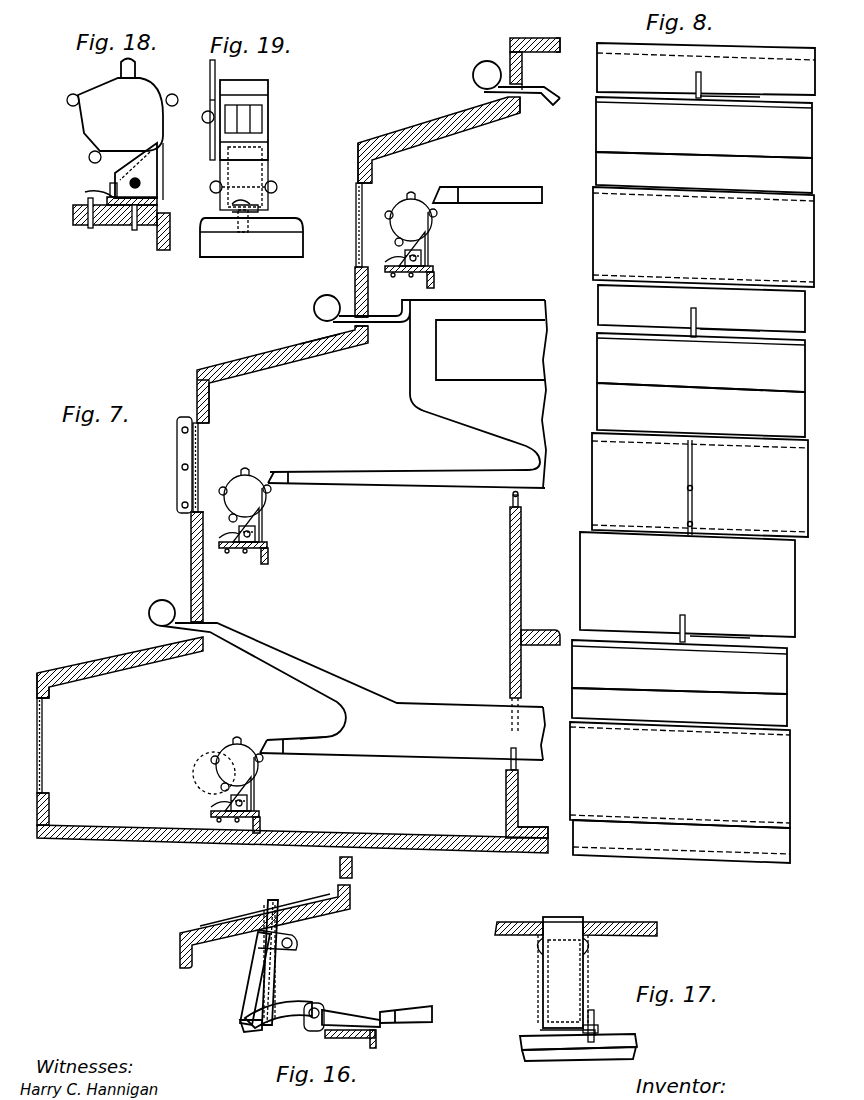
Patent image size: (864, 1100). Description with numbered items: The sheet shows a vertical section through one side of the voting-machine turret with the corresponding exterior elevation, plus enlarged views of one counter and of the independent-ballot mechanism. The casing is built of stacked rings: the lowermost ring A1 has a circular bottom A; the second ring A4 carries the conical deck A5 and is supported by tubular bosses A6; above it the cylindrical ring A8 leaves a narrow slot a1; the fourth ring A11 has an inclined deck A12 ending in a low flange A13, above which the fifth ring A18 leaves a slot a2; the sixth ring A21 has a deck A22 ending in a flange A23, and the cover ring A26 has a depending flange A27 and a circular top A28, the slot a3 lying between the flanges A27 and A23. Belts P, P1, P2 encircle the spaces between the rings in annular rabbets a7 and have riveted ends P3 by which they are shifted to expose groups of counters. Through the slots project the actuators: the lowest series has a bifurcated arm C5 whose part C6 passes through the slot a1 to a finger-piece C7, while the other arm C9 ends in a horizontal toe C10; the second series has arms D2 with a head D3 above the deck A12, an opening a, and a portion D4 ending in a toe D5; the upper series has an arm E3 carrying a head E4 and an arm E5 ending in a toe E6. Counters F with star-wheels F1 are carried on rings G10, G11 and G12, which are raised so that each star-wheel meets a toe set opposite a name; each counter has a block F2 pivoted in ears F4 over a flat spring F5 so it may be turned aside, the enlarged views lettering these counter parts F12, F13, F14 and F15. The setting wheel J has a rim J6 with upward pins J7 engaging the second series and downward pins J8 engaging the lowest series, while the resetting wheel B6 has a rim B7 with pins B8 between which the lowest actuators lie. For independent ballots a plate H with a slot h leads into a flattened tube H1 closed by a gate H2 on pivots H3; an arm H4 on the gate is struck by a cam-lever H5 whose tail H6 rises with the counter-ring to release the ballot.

In FIG. 7, the circular bottom A is at (408, 846).
In FIG. 7, the lowermost ring A1 is at (50, 812).
In FIG. 8, the lowermost ring A1 is at (681, 841).
In FIG. 7, the second ring A4 is at (50, 698).
In FIG. 8, the second ring A4 is at (679, 707).
In FIG. 7, the conical deck A5 is at (110, 660).
In FIG. 8, the conical deck A5 is at (679, 667).
In FIG. 7, the tubular bosses A6 is at (190, 566).
In FIG. 8, the third ring A8 is at (687, 584).
In FIG. 7, the fourth ring A11 is at (209, 402).
In FIG. 8, the fourth ring A11 is at (701, 410).
In FIG. 7, the inclined deck A12 is at (285, 362).
In FIG. 8, the inclined deck A12 is at (701, 362).
In FIG. 7, the cylindrical flange A13 is at (360, 338).
In FIG. 7, the fifth ring A18 is at (355, 285).
In FIG. 8, the fifth ring A18 is at (701, 308).
In FIG. 7, the sixth ring A21 is at (372, 172).
In FIG. 8, the sixth ring A21 is at (704, 172).
In FIG. 7, the inclined deck A22 is at (450, 122).
In FIG. 8, the inclined deck A22 is at (704, 127).
In FIG. 7, the cylindrical flange A23 is at (520, 108).
In FIG. 7, the cover ring A26 is at (510, 41).
In FIG. 8, the cover ring A26 is at (706, 69).
In FIG. 7, the depending flange A27 is at (522, 68).
In FIG. 7, the circular top A28 is at (560, 44).
In FIG. 7, the slot a is at (490, 350).
In FIG. 7, the circumferential slot a1 is at (204, 628).
In FIG. 8, the circumferential slot a1 is at (716, 639).
In FIG. 7, the circumferential slot a2 is at (370, 318).
In FIG. 8, the circumferential slot a2 is at (736, 331).
In FIG. 7, the circumferential slot a3 is at (530, 88).
In FIG. 8, the circumferential slot a3 is at (736, 98).
In FIG. 7, the annular rabbets a7 is at (357, 184).
In FIG. 7, the resetting wheel B6 is at (534, 822).
In FIG. 7, the rim B7 is at (506, 798).
In FIG. 7, the upwardly-projecting pins B8 is at (510, 752).
In FIG. 7, the bifurcated arm C5 is at (402, 733).
In FIG. 7, the arm part C6 is at (297, 662).
In FIG. 7, the finger-piece C7 is at (152, 605).
In FIG. 8, the finger-piece C7 is at (679, 628).
In FIG. 7, the fork arm C9 is at (306, 746).
In FIG. 7, the horizontal toe C10 is at (272, 739).
In FIG. 7, the actuator arm D2 is at (498, 300).
In FIG. 7, the head D3 is at (314, 305).
In FIG. 8, the head D3 is at (697, 312).
In FIG. 7, the toe portion D4 is at (376, 474).
In FIG. 7, the toe D5 is at (282, 467).
In FIG. 7, the actuator arm E3 is at (556, 101).
In FIG. 7, the head E4 is at (474, 74).
In FIG. 8, the head E4 is at (695, 80).
In FIG. 7, the actuator arm E5 is at (520, 192).
In FIG. 7, the toe E6 is at (448, 192).
In FIG. 7, the counter F is at (432, 224).
In FIG. 18, the counter F is at (122, 120).
In FIG. 19, the counter F is at (244, 120).
In FIG. 7, the star-wheel F1 is at (405, 198).
In FIG. 18, the star-wheel F1 is at (73, 90).
In FIG. 19, the star-wheel F1 is at (210, 66).
In FIG. 7, the block F2 is at (426, 242).
In FIG. 7, the ears F4 is at (422, 256).
In FIG. 7, the flat spring F5 is at (388, 264).
In FIG. 18, the counter bracket F12 is at (150, 157).
In FIG. 19, the counter bracket F12 is at (252, 168).
In FIG. 18, the pivot pin F13 is at (140, 181).
In FIG. 19, the pivot pin F13 is at (274, 188).
In FIG. 18, the rivet F14 is at (110, 186).
In FIG. 19, the rivet F14 is at (262, 206).
In FIG. 18, the lever F15 is at (85, 194).
In FIG. 19, the lever F15 is at (228, 204).
In FIG. 7, the counter-ring G10 is at (262, 820).
In FIG. 18, the counter-ring G10 is at (157, 240).
In FIG. 19, the counter-ring G10 is at (243, 256).
In FIG. 7, the counter-ring G11 is at (270, 552).
In FIG. 7, the counter-ring G12 is at (436, 276).
In FIG. 16, the plate H is at (232, 922).
In FIG. 16, the transverse slot h is at (274, 905).
In FIG. 16, the flattened tube H1 is at (278, 968).
In FIG. 17, the flattened tube H1 is at (570, 930).
In FIG. 16, the swinging gate H2 is at (250, 984).
In FIG. 17, the swinging gate H2 is at (538, 988).
In FIG. 16, the pivots H3 is at (292, 940).
In FIG. 17, the pivots H3 is at (590, 950).
In FIG. 16, the arm H4 is at (245, 1030).
In FIG. 17, the arm H4 is at (598, 1028).
In FIG. 16, the cam-lever H5 is at (290, 1010).
In FIG. 17, the cam-lever H5 is at (592, 1012).
In FIG. 16, the tail H6 is at (344, 1016).
In FIG. 7, the setting wheel J is at (546, 630).
In FIG. 7, the rim J6 is at (510, 583).
In FIG. 7, the upward pins J7 is at (512, 500).
In FIG. 7, the downward pins J8 is at (510, 702).
In FIG. 7, the belt P is at (42, 748).
In FIG. 7, the belt P1 is at (198, 456).
In FIG. 7, the belt P2 is at (356, 216).
In FIG. 7, the riveted ends P3 is at (180, 468).